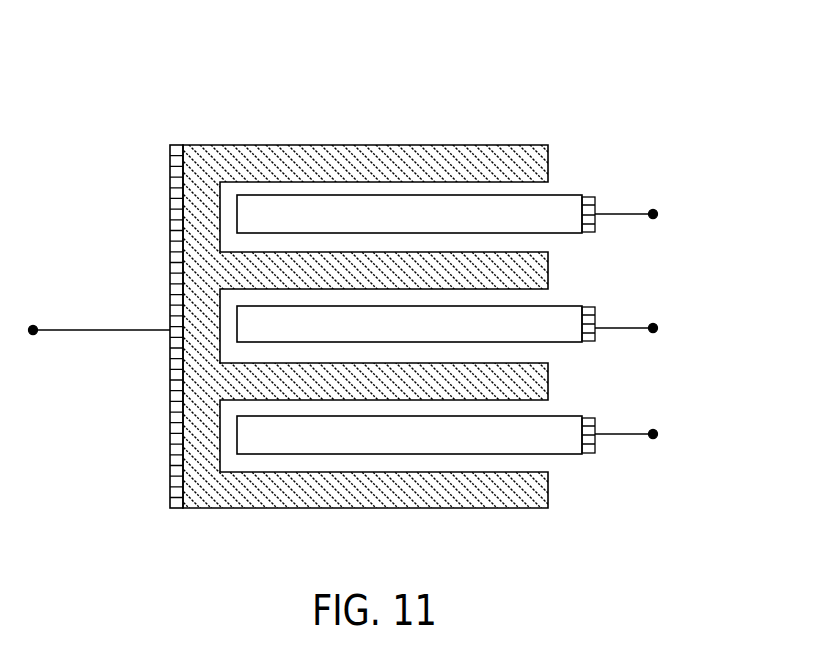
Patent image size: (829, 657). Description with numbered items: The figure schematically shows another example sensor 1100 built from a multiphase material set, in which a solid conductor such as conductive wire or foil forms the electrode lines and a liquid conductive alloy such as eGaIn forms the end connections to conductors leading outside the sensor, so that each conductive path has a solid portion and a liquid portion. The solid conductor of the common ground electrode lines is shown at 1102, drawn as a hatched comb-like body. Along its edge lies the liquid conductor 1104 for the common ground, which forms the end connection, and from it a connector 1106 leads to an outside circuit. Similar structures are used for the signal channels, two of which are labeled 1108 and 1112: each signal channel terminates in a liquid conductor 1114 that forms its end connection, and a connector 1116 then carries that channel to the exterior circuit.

The sensor 1100 is at (556, 38).
The solid conductor of common ground electrode lines 1102 is at (248, 144).
The liquid conductor for common ground 1104 is at (177, 162).
The connector to outside circuit for common ground 1106 is at (78, 329).
The signal channel 1108 is at (565, 193).
The signal channel 1112 is at (565, 416).
The liquid conductor 1114 is at (598, 205).
The connector 1116 is at (633, 215).